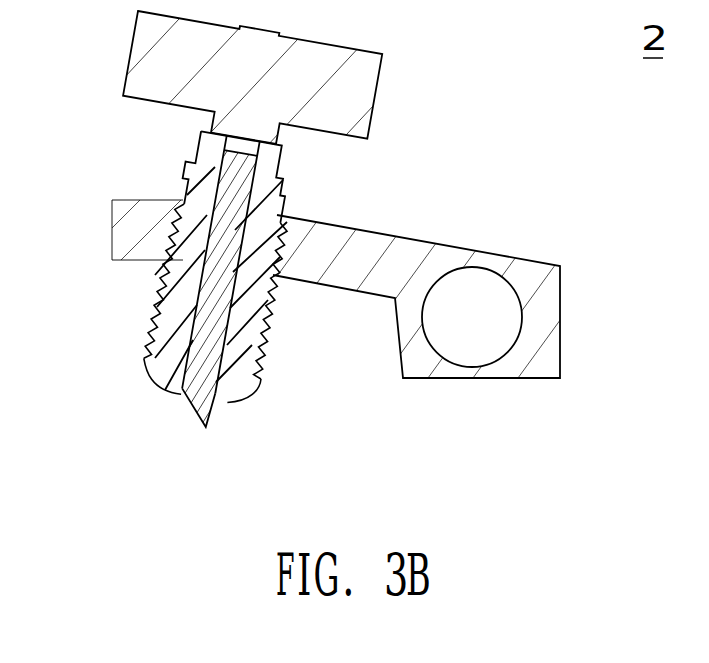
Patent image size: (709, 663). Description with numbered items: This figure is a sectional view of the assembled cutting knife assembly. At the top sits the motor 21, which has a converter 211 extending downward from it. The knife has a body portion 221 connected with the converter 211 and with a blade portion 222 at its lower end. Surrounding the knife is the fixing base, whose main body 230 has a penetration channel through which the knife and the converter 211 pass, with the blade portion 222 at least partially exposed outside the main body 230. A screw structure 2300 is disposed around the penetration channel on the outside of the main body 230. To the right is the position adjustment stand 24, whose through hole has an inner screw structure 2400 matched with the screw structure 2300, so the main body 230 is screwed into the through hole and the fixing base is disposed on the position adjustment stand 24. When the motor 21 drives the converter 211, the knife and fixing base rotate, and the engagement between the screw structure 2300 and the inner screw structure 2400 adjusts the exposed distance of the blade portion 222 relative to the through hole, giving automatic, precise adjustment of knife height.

The motor 21 is at (379, 91).
The converter 211 is at (232, 208).
The body portion 221 is at (211, 310).
The blade portion 222 is at (200, 408).
The position adjustment stand 24 is at (386, 272).
The inner screw structure 2400 is at (162, 227).
The main body 230 is at (156, 312).
The screw structure 2300 is at (147, 362).